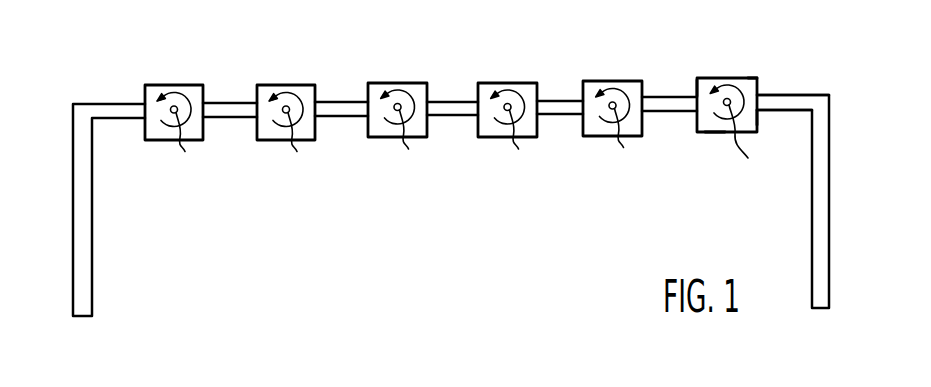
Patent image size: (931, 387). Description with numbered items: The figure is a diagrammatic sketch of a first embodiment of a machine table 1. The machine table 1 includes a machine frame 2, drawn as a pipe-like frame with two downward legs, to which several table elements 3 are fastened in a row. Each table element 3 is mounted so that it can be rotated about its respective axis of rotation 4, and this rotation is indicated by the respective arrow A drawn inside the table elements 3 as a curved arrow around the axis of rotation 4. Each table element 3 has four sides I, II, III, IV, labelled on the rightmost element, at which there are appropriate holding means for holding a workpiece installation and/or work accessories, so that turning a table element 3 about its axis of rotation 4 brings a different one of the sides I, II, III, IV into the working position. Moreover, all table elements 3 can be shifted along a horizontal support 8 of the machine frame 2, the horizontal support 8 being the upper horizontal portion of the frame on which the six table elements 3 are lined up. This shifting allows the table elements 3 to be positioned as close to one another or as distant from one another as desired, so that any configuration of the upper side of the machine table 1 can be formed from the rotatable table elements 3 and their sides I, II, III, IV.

The machine table 1 is at (100, 64).
The machine frame 2 is at (826, 234).
The table element 3 is at (178, 80).
The axis of rotation 4 is at (465, 137).
The horizontal support 8 is at (791, 103).
The arrow A is at (158, 94).
The side I is at (748, 78).
The side II is at (757, 118).
The side III is at (714, 133).
The side IV is at (697, 88).